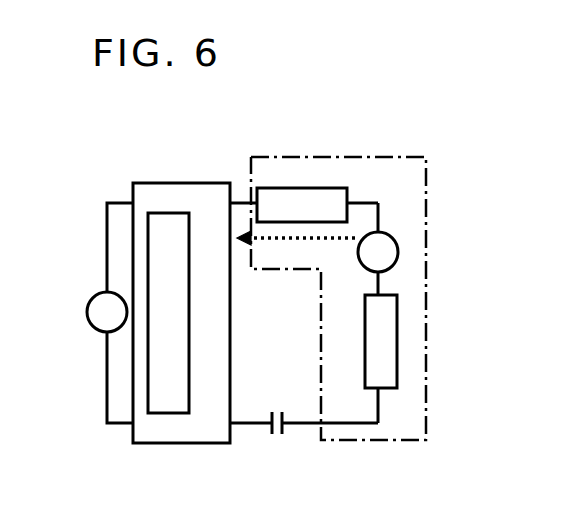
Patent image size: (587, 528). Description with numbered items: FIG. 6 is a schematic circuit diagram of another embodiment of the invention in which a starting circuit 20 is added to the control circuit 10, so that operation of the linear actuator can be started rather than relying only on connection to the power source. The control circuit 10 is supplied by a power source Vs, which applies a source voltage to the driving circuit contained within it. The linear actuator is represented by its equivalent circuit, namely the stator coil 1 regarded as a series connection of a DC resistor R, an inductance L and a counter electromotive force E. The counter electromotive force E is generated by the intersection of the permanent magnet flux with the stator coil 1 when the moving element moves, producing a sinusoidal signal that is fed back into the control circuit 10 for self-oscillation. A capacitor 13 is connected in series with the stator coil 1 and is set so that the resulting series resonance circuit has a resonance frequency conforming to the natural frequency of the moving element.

The control circuit 10 is at (172, 190).
The starting circuit 20 is at (152, 212).
The power source Vs is at (87, 313).
The DC resistor R is at (295, 192).
The counter electromotive force E is at (400, 248).
The inductance L is at (395, 345).
The capacitor 13 is at (280, 435).
The stator coil 1 is at (422, 153).